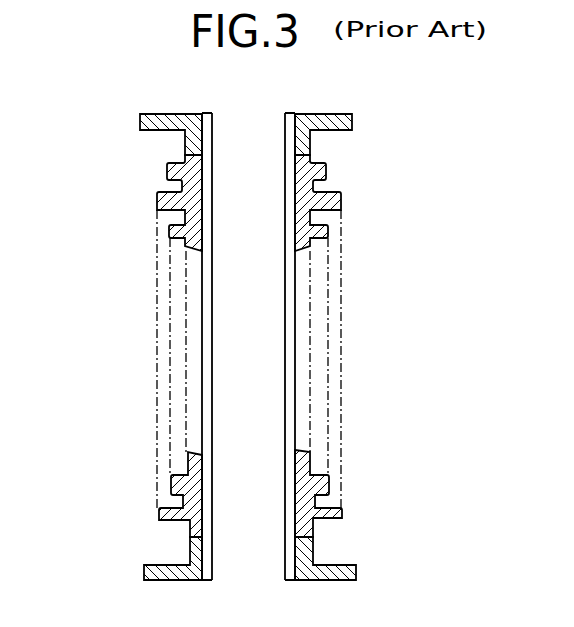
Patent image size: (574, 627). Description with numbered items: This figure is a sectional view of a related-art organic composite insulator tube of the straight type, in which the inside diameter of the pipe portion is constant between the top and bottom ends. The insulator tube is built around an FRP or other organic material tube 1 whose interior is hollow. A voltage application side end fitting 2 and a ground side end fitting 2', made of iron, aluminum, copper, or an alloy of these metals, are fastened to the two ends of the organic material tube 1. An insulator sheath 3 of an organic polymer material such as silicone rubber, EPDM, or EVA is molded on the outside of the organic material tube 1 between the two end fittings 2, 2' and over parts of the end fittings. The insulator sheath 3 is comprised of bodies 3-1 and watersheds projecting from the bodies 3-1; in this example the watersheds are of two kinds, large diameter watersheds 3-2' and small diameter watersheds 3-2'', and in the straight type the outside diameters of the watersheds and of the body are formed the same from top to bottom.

The organic material tube 1 is at (283, 129).
The voltage application side end fitting 2 is at (217, 129).
The ground side end fitting 2' is at (219, 560).
The insulator sheath 3 is at (137, 172).
The large diameter watershed 3-2' is at (302, 203).
The small diameter watershed 3-2'' is at (311, 236).
The body 3-1 is at (318, 493).